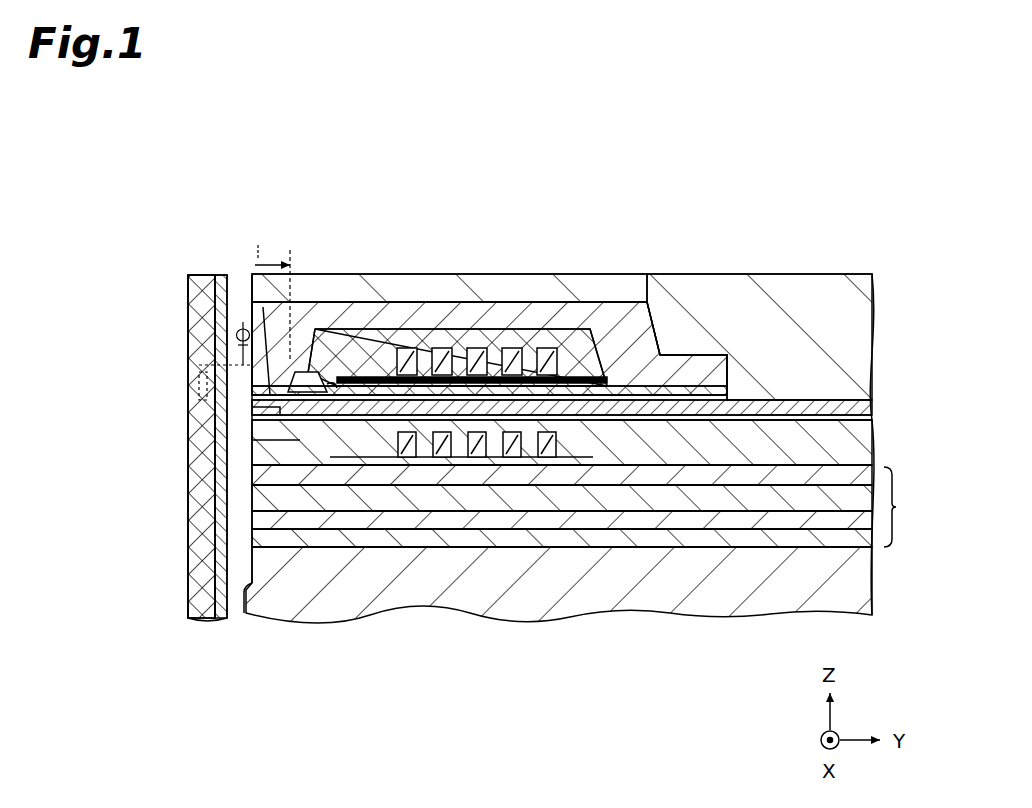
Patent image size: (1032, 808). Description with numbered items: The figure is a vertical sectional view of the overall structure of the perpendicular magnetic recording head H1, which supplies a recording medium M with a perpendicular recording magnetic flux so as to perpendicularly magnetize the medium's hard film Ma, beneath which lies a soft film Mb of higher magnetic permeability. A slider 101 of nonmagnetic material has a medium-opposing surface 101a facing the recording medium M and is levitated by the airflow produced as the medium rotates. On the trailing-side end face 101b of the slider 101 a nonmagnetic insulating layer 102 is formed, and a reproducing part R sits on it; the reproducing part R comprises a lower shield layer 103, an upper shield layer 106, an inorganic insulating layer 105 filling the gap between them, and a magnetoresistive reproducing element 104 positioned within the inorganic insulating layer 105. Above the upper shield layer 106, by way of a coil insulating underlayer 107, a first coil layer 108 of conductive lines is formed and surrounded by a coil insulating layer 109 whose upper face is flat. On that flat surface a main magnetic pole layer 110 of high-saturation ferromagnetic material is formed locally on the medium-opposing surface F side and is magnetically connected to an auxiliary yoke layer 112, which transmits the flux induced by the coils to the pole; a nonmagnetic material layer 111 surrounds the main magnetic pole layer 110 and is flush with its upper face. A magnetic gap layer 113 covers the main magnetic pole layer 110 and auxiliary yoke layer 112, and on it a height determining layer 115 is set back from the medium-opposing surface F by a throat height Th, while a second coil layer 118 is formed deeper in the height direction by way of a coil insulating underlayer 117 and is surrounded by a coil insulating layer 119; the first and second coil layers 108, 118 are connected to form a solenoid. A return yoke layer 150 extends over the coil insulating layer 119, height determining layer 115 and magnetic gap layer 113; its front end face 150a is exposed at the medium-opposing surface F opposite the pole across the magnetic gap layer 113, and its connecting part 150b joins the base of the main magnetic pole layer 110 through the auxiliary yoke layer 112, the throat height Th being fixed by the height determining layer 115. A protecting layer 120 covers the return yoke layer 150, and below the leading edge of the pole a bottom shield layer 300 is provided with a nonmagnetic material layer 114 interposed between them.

The slider 101 is at (688, 605).
The medium-opposing surface 101a is at (245, 600).
The trailing-side end face 101b is at (758, 541).
The nonmagnetic insulating layer 102 is at (252, 538).
The lower shield layer 103 is at (252, 519).
The reproducing element 104 is at (252, 497).
The inorganic insulating layer 105 is at (352, 502).
The upper shield layer 106 is at (252, 473).
The coil insulating underlayer 107 is at (416, 440).
The first coil layer 108 is at (478, 464).
The coil insulating layer 109 is at (252, 443).
The main magnetic pole layer 110 is at (252, 410).
The nonmagnetic material layer 111 is at (833, 399).
The auxiliary yoke layer 112 is at (425, 390).
The magnetic gap layer 113 is at (258, 272).
The nonmagnetic material layer 114 is at (628, 421).
The height determining layer 115 is at (312, 301).
The coil insulating underlayer 117 is at (362, 322).
The second coil layer 118 is at (473, 348).
The coil insulating layer 119 is at (568, 331).
The protecting layer 120 is at (773, 313).
The return yoke layer 150 is at (525, 301).
The front end face 150a is at (250, 298).
The connecting part 150b is at (686, 368).
The bottom shield layer 300 is at (293, 576).
The perpendicular magnetic recording head H1 is at (153, 164).
The recording medium M is at (228, 626).
The hard film Ma is at (190, 620).
The soft film Mb is at (210, 586).
The reproducing part R is at (899, 507).
The medium-opposing surface F is at (247, 289).
The throat height Th is at (265, 262).